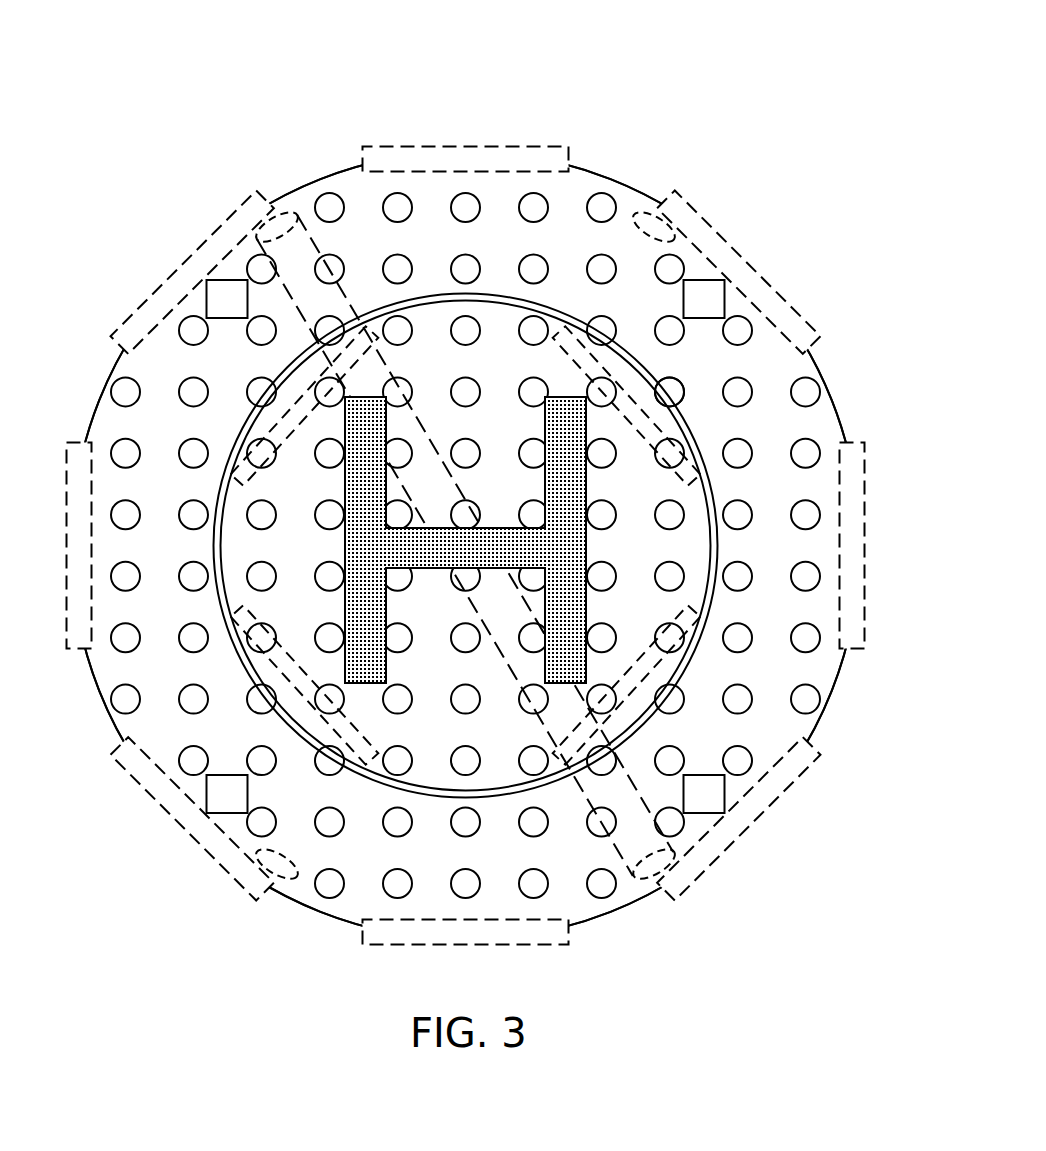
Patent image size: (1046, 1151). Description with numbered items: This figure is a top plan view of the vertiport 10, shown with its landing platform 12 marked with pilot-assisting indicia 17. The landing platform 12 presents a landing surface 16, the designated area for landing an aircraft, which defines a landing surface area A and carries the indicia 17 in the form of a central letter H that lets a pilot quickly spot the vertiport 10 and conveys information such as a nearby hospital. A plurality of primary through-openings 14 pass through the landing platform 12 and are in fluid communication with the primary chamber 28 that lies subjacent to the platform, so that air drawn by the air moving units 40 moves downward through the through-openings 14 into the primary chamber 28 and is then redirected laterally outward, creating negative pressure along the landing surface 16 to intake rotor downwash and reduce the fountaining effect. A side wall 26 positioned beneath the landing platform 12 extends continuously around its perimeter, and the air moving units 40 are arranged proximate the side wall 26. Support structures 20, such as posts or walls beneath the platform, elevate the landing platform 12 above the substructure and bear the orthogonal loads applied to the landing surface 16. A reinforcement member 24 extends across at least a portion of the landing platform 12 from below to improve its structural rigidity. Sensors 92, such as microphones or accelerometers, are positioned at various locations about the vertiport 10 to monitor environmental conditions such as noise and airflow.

The vertiport 10 is at (749, 93).
The landing platform 12 is at (428, 185).
The primary through-openings 14 is at (663, 284).
The landing surface 16 is at (444, 368).
The landing surface area A is at (508, 361).
The pilot-assisting indicia 17 is at (588, 554).
The support structures 20 is at (283, 210).
The reinforcement member 24 is at (438, 452).
The side wall 26 is at (830, 392).
The primary chamber 28 is at (688, 385).
The air moving unit 40 is at (458, 147).
The sensors 92 is at (213, 313).